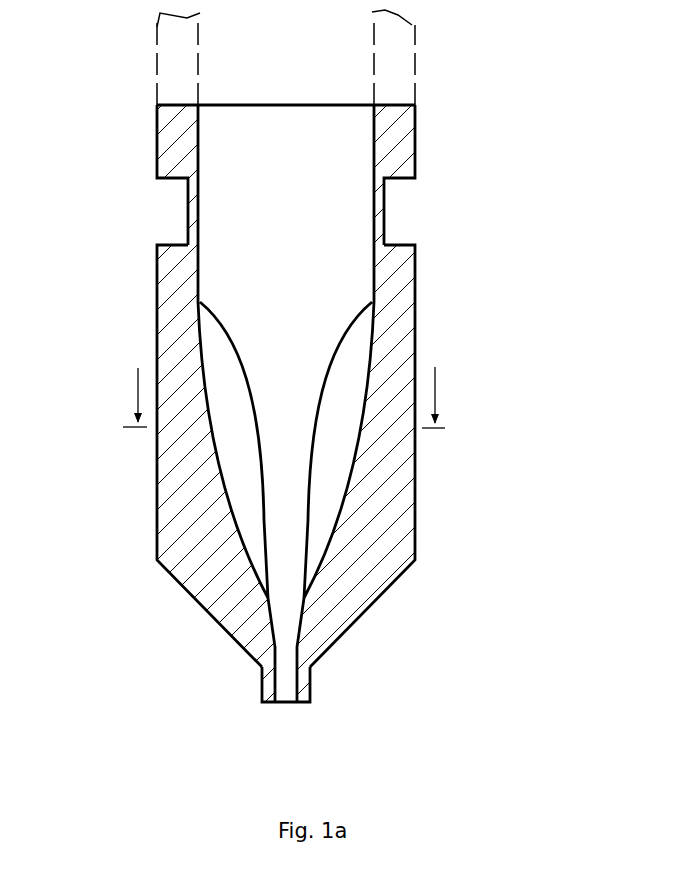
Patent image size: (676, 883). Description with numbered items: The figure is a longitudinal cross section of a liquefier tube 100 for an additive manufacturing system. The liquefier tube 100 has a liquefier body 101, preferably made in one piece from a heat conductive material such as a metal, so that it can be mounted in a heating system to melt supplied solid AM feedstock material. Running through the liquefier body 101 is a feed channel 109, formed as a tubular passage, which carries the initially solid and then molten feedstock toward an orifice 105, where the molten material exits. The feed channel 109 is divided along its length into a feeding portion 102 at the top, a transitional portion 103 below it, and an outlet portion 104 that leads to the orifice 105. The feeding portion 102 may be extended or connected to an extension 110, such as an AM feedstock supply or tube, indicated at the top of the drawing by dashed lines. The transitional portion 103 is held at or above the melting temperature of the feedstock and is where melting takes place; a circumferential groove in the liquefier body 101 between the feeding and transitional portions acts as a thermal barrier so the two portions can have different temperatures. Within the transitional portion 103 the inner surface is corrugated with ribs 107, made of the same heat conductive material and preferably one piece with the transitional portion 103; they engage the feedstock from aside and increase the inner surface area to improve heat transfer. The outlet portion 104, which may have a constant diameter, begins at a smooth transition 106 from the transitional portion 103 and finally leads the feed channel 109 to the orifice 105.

The liquefier tube 100 is at (119, 114).
The liquefier body 101 is at (173, 338).
The feeding portion 102 is at (425, 105).
The transitional portion 103 is at (467, 245).
The outlet portion 104 is at (300, 643).
The orifice 105 is at (273, 704).
The transition 106 is at (264, 676).
The ribs 107 is at (325, 505).
The feed channel 109 is at (310, 185).
The extension 110 is at (370, 59).